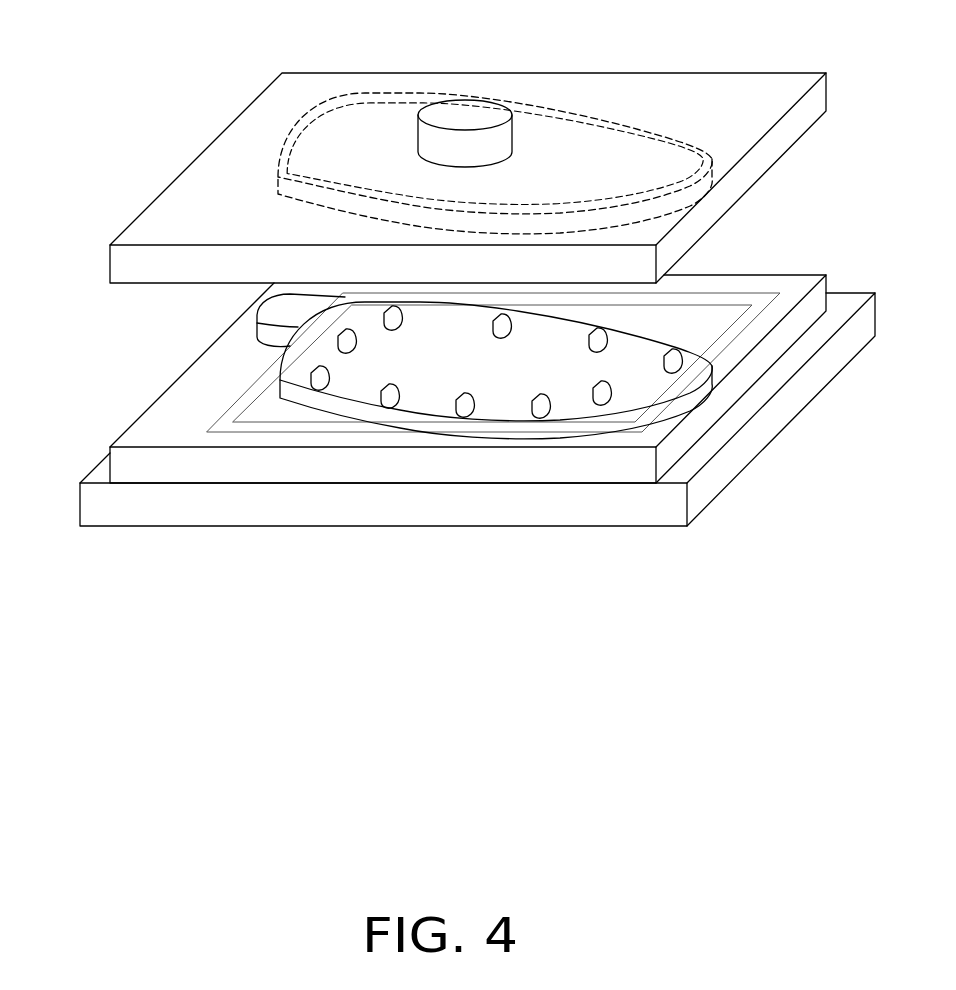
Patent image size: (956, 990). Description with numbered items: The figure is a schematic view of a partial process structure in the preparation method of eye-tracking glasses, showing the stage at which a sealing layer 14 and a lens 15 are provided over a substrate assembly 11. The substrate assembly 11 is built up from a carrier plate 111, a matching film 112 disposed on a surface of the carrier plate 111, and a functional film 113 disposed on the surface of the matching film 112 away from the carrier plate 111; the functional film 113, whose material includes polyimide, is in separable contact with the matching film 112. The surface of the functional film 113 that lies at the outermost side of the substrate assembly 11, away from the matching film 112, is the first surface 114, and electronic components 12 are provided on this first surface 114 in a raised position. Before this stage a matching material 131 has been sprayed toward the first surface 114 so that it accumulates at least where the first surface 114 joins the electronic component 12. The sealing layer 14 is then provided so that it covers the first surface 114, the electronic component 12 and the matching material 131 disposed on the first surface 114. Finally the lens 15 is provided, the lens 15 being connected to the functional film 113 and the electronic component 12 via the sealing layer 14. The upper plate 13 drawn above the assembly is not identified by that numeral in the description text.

The substrate assembly 11 is at (447, 428).
The carrier plate 111 is at (187, 497).
The matching film 112 is at (183, 400).
The functional film 113 is at (287, 397).
The matching material 131 is at (298, 432).
The electronic component 12 is at (537, 413).
The upper plate 13 is at (468, 178).
The sealing layer 14 is at (422, 431).
The first surface 114 is at (305, 350).
The lens 15 is at (402, 112).